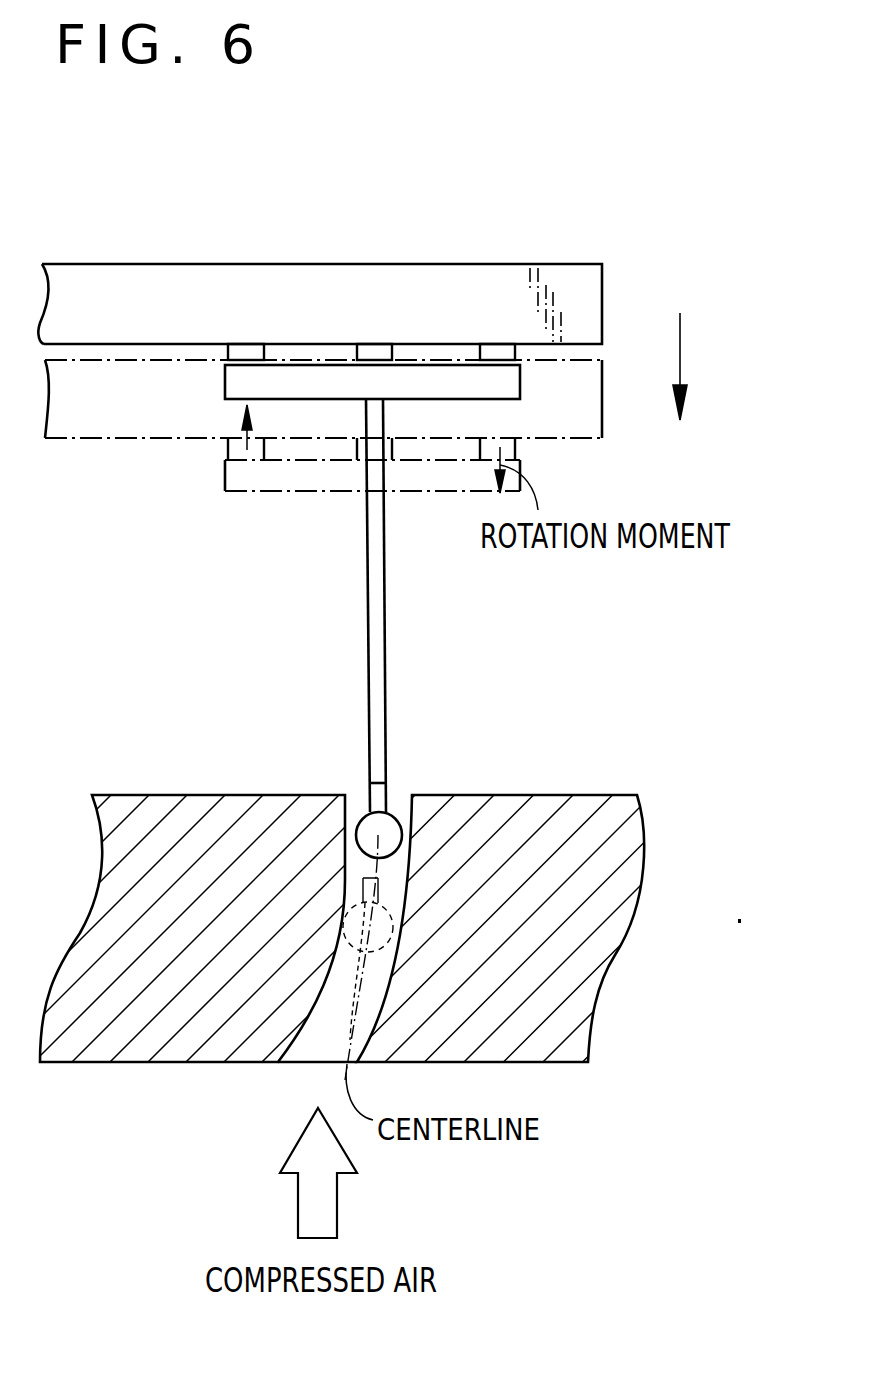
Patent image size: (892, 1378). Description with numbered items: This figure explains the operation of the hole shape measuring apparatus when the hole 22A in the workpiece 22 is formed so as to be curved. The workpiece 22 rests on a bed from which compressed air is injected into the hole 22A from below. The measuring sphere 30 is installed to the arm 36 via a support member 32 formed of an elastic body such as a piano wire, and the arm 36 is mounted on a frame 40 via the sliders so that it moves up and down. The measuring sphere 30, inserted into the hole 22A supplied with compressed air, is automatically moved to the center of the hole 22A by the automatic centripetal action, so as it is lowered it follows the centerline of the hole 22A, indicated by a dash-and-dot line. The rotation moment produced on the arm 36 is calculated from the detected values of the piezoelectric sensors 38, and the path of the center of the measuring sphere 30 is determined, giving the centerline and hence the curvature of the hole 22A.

The workpiece 22 is at (507, 812).
The hole 22A is at (300, 1040).
The measuring sphere 30 is at (355, 815).
The support member 32 is at (385, 625).
The arm 36 is at (157, 278).
The piezoelectric sensors 38 is at (493, 350).
The frame 40 is at (225, 373).